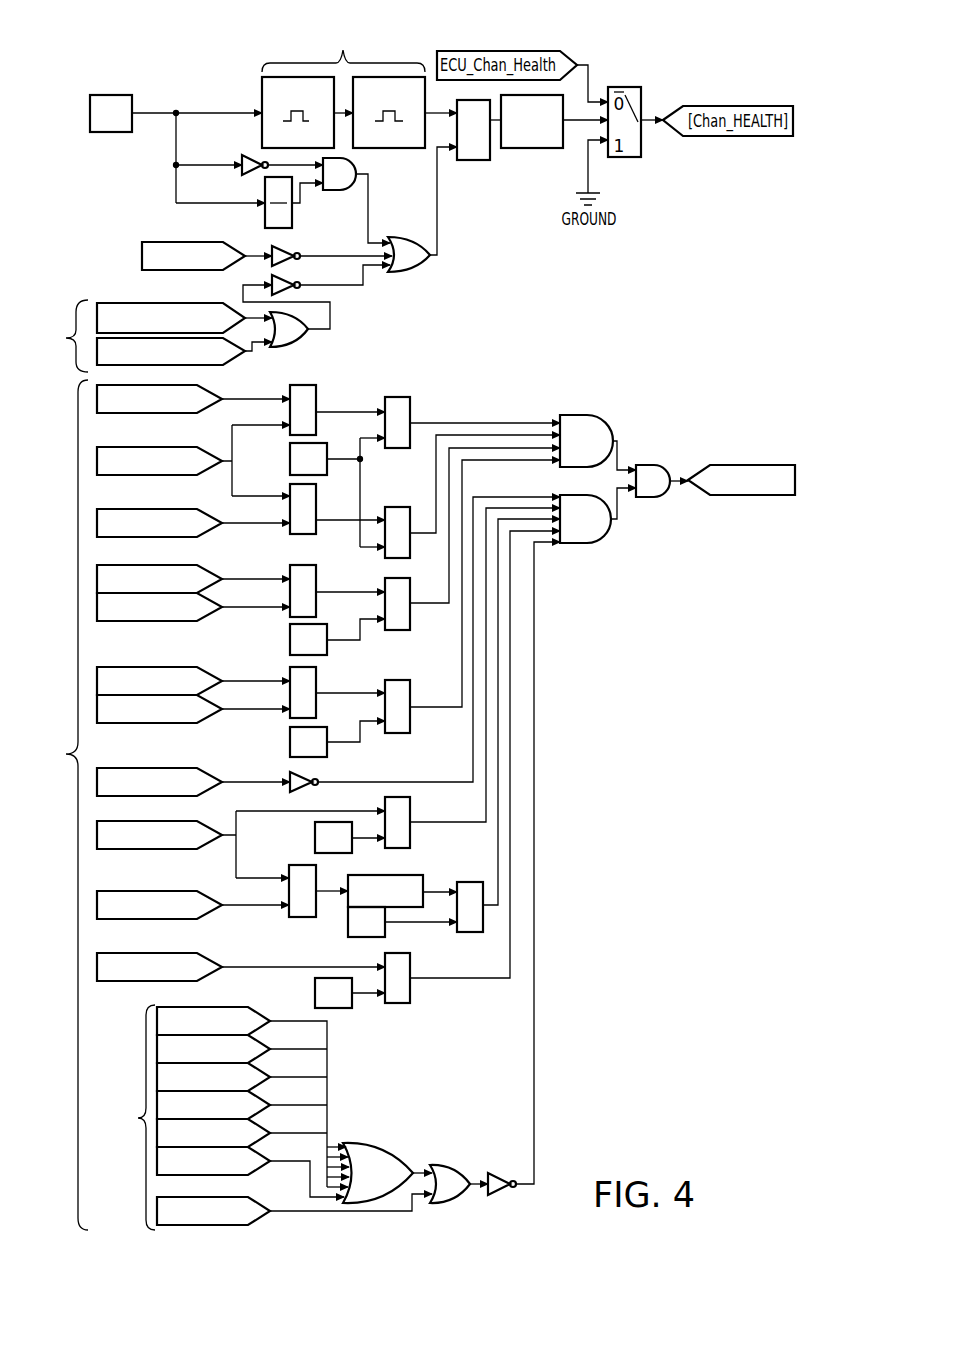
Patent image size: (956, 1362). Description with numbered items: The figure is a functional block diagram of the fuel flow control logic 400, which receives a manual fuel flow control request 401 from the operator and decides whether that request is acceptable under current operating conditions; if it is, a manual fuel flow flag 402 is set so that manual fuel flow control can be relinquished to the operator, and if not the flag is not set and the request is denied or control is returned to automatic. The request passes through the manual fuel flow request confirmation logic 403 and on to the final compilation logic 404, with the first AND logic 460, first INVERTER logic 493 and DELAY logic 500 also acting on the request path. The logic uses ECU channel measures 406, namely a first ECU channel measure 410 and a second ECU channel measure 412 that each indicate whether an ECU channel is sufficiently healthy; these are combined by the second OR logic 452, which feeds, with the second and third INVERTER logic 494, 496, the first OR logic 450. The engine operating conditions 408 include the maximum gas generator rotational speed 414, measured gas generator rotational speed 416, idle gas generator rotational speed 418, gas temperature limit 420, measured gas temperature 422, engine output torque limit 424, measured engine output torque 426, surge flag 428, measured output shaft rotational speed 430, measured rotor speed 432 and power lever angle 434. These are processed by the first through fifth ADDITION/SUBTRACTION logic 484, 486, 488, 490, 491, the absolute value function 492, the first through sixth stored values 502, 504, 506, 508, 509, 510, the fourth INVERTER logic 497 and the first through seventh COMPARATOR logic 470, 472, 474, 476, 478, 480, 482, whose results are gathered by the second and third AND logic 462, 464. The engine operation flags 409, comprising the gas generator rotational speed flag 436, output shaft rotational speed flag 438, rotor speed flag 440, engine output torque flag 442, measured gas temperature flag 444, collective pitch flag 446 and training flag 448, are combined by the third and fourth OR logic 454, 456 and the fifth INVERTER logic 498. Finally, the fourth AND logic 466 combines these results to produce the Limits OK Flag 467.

The fuel flow control logic 400 is at (740, 50).
The manual fuel flow control request 401 is at (132, 106).
The manual fuel flow flag 402 is at (538, 150).
The manual fuel flow request confirmation logic 403 is at (359, 85).
The final compilation logic 404 is at (476, 162).
The ECU channel measures 406 is at (51, 336).
The engine operating conditions 408 is at (51, 805).
The engine operation flags 409 is at (120, 1117).
The first ECU channel measure 410 is at (150, 303).
The second ECU channel measure 412 is at (242, 356).
The maximum gas generator rotational speed 414 is at (150, 413).
The measured gas generator rotational speed 416 is at (150, 475).
The idle gas generator rotational speed 418 is at (150, 537).
The gas temperature limit 420 is at (226, 561).
The measured gas temperature 422 is at (167, 621).
The engine output torque limit 424 is at (165, 667).
The measured engine output torque 426 is at (167, 723).
The surge flag 428 is at (160, 768).
The measured output shaft rotational speed 430 is at (167, 849).
The measured rotor speed 432 is at (157, 891).
The power lever angle 434 is at (157, 953).
The gas generator rotational speed flag 436 is at (192, 1005).
The output shaft rotational speed flag 438 is at (264, 1033).
The rotor speed flag 440 is at (264, 1061).
The engine output torque flag 442 is at (264, 1089).
The measured gas temperature flag 444 is at (264, 1117).
The collective pitch flag 446 is at (264, 1145).
The training flag 448 is at (240, 1197).
The first OR logic 450 is at (412, 275).
The second OR logic 452 is at (308, 338).
The third OR logic 454 is at (380, 1143).
The fourth OR logic 456 is at (440, 1165).
The first AND logic 460 is at (362, 163).
The second AND logic 462 is at (582, 415).
The third AND logic 464 is at (582, 543).
The fourth AND logic 466 is at (648, 465).
The Limits OK Flag 467 is at (142, 258).
The first COMPARATOR logic 470 is at (398, 397).
The second COMPARATOR logic 472 is at (398, 507).
The third COMPARATOR logic 474 is at (393, 630).
The fourth COMPARATOR logic 476 is at (393, 733).
The fifth COMPARATOR logic 478 is at (412, 818).
The sixth COMPARATOR logic 480 is at (478, 932).
The seventh COMPARATOR logic 482 is at (398, 1003).
The first ADDITION/SUBTRACTION logic 484 is at (316, 396).
The second ADDITION/SUBTRACTION logic 486 is at (290, 512).
The third ADDITION/SUBTRACTION logic 488 is at (316, 582).
The fourth ADDITION/SUBTRACTION logic 490 is at (316, 684).
The fifth ADDITION/SUBTRACTION logic 491 is at (289, 915).
The absolute value function 492 is at (410, 875).
The first INVERTER logic 493 is at (244, 156).
The second INVERTER logic 494 is at (293, 251).
The third INVERTER logic 496 is at (295, 284).
The fourth INVERTER logic 497 is at (315, 778).
The fifth INVERTER logic 498 is at (497, 1172).
The DELAY logic 500 is at (265, 210).
The first stored value 502 is at (290, 470).
The second stored value 504 is at (290, 652).
The third stored value 506 is at (290, 755).
The fourth stored value 508 is at (315, 850).
The fifth stored value 509 is at (348, 935).
The sixth stored value 510 is at (315, 1005).